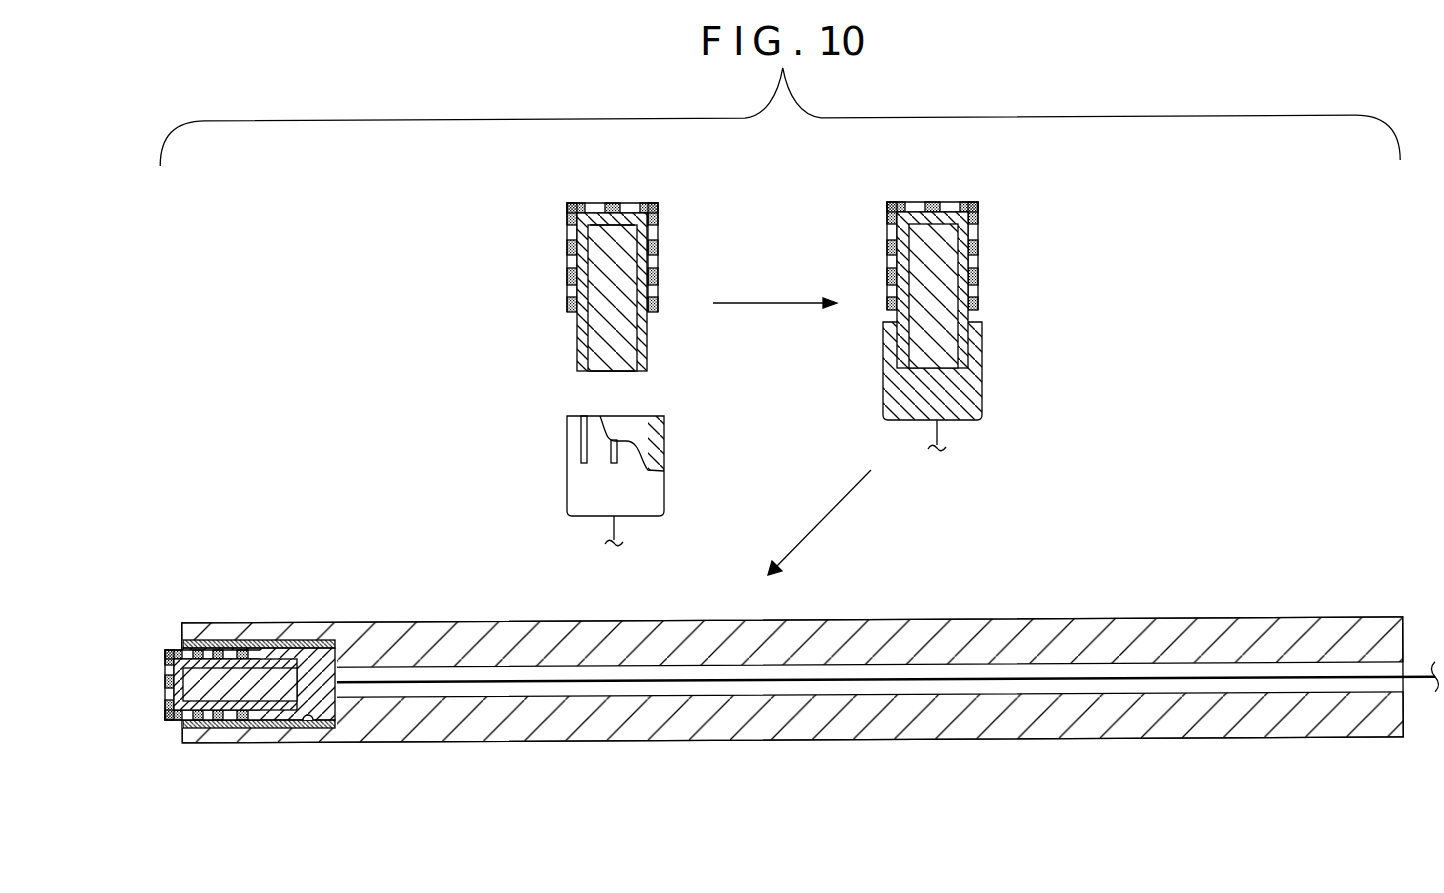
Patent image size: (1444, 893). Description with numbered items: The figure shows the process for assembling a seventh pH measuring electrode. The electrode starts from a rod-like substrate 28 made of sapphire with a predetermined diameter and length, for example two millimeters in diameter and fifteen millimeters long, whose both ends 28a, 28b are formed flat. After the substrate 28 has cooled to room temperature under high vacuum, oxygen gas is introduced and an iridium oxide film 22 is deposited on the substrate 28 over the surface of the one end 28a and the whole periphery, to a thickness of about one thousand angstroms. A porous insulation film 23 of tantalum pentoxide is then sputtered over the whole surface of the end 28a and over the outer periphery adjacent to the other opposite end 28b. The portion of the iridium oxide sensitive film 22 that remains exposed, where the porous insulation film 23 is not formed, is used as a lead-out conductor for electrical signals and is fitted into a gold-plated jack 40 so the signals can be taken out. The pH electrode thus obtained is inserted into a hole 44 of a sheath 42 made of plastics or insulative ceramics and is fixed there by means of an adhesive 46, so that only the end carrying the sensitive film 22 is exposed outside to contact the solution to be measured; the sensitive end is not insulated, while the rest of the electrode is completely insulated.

The iridium oxide film 22 is at (580, 320).
The porous insulation film 23 is at (614, 210).
The rod-like substrate 28 is at (610, 370).
The one end of the substrate 28a is at (602, 204).
The other opposite end of the substrate 28b is at (645, 372).
The gold-plated jack 40 is at (567, 470).
The sheath 42 is at (441, 741).
The hole 44 is at (310, 725).
The adhesive 46 is at (237, 728).